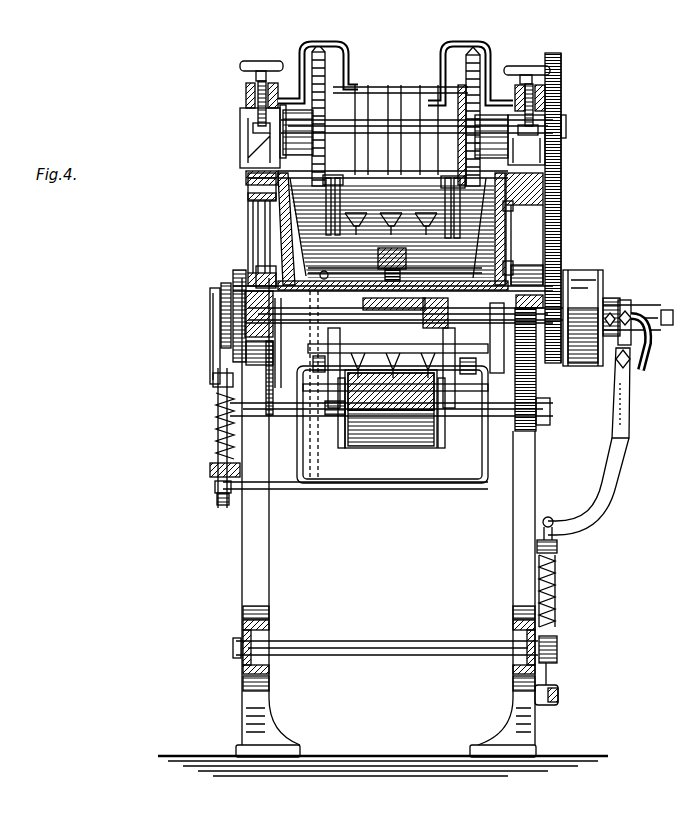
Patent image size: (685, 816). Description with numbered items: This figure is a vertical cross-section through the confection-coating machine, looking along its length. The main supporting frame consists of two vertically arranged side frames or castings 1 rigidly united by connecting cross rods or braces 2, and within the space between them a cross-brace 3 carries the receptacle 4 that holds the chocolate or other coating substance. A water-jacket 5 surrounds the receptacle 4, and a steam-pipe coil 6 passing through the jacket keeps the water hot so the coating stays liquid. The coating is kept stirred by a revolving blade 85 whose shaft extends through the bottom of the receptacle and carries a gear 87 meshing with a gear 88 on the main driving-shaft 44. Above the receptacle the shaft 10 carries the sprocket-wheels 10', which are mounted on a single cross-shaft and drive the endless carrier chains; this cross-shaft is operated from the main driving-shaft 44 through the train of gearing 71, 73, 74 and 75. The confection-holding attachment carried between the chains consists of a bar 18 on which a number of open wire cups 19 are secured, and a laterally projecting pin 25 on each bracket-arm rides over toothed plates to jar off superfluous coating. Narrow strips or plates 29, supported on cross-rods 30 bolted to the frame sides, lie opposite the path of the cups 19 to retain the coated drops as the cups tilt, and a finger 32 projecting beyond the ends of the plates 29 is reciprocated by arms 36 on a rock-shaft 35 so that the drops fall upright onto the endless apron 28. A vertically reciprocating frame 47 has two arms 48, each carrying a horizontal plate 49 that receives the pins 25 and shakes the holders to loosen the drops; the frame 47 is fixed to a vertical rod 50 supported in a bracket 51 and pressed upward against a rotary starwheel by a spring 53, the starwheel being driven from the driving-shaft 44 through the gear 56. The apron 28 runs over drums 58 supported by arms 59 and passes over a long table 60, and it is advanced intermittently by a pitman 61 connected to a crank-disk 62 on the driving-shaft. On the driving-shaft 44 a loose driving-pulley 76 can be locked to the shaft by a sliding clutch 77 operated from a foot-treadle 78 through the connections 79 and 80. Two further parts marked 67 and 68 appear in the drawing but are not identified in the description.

The side frames 1 is at (258, 574).
The connecting cross rods 2 is at (456, 412).
The cross-brace 3 is at (252, 268).
The receptacle 4 is at (268, 202).
The water-jacket 5 is at (283, 228).
The steam-pipe coil 6 is at (322, 264).
The shaft 10 is at (416, 128).
The sprocket-wheels 10' is at (396, 115).
The bar 18 is at (395, 315).
The open wire cups 19 is at (393, 208).
The laterally-projecting pin 25 is at (292, 384).
The endless apron 28 is at (400, 442).
The narrow strips or plates 29 is at (396, 82).
The cross-rods 30 is at (458, 36).
The finger 32 is at (391, 391).
The rock-shaft 35 is at (442, 412).
The arms 36 is at (391, 391).
The main driving-shaft 44 is at (505, 273).
The vertically-reciprocating frame 47 is at (350, 481).
The arms 48 is at (487, 464).
The horizontally-arranged plate 49 is at (306, 356).
The vertically-arranged rod 50 is at (210, 420).
The bracket 51 is at (202, 461).
The spring 53 is at (208, 437).
The gear 56 is at (226, 270).
The drums 58 is at (332, 425).
The arms 59 is at (512, 380).
The table 60 is at (355, 440).
The pitman 61 is at (204, 326).
The crank-disk 62 is at (213, 300).
The bearing housing 67 is at (235, 143).
The adjusting screw 68 is at (242, 86).
The gear 71 is at (573, 360).
The gear 73 is at (556, 258).
The gear 74 is at (553, 171).
The gear 75 is at (553, 94).
The loose driving-pulley 76 is at (594, 266).
The sliding clutch 77 is at (626, 290).
The foot-treadle 78 is at (552, 690).
The connection 79 is at (549, 594).
The connection 80 is at (612, 466).
The revolving blade 85 is at (380, 261).
The gear 87 is at (355, 297).
The gear 88 is at (424, 313).